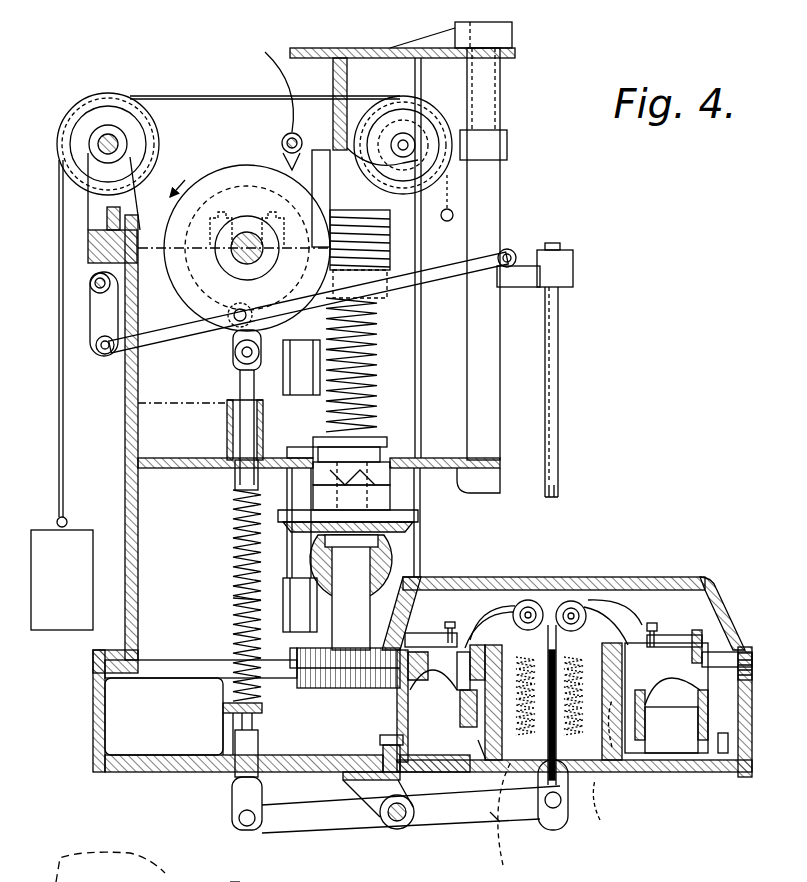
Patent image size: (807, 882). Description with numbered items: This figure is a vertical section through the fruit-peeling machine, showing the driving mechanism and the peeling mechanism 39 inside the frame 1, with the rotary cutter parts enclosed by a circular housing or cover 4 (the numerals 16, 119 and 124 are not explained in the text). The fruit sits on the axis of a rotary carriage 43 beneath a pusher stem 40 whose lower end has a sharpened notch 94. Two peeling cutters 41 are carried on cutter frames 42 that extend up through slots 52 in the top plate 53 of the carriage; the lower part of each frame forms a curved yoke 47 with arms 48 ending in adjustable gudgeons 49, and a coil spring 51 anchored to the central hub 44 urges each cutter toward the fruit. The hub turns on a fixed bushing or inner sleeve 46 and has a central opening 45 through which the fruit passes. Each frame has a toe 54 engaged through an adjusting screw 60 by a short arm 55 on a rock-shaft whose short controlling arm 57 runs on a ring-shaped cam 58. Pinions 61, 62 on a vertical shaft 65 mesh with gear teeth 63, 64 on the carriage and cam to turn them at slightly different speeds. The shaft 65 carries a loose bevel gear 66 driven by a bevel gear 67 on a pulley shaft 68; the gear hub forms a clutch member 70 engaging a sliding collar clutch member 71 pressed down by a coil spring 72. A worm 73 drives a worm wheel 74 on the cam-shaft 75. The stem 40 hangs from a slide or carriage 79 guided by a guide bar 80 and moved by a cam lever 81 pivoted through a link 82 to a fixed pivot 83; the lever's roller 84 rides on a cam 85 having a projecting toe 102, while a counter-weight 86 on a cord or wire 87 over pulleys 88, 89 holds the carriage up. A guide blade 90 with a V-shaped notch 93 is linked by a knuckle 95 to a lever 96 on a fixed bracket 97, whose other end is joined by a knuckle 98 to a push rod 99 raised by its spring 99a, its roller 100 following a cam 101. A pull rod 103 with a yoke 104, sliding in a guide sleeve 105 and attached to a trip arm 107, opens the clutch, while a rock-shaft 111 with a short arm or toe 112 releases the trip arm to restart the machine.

The frame 1 is at (127, 393).
The circular housing or cover 4 is at (682, 577).
The housing cover 16 is at (470, 590).
The peeling mechanism 39 is at (614, 611).
The pusher stem 40 is at (555, 377).
The peeling cutter 41 is at (528, 598).
The cutter frame 42 is at (486, 622).
The rotary carriage 43 is at (668, 702).
The central hub 44 is at (630, 745).
The central opening 45 is at (483, 742).
The fixed bushing or inner sleeve 46 is at (612, 747).
The curved yoke 47 is at (462, 722).
The arms or prongs 48 is at (600, 820).
The adjustable gudgeons 49 is at (540, 838).
The coil spring 51 is at (550, 689).
The slot 52 is at (425, 690).
The top plate 53 is at (705, 632).
The toe 54 is at (452, 668).
The short arm 55 is at (440, 638).
The short controlling arm 57 is at (418, 632).
The ring-shaped cam 58 is at (752, 660).
The adjusting screw 60 is at (455, 624).
The pinion 61 is at (305, 690).
The pinion 62 is at (297, 658).
The gear teeth 63 is at (740, 692).
The gear teeth 64 is at (752, 673).
The vertical shaft 65 is at (345, 610).
The bevel gear 66 is at (412, 533).
The bevel gear 67 is at (392, 552).
The pulley shaft 68 is at (338, 558).
The clutch member 70 is at (315, 498).
The clutch member 71 is at (390, 452).
The coil spring 72 is at (377, 375).
The worm 73 is at (358, 217).
The worm wheel 74 is at (193, 235).
The cam-shaft 75 is at (247, 240).
The slide or carriage 79 is at (478, 215).
The guide bar 80 is at (490, 330).
The cam lever 81 is at (424, 284).
The link 82 is at (90, 307).
The fixed pivot 83 is at (90, 282).
The roller 84 is at (226, 340).
The cam 85 is at (190, 340).
The counter-weight 86 is at (44, 620).
The cord or wire 87 is at (234, 95).
The pulley 88 is at (163, 125).
The pulley 89 is at (437, 104).
The guide blade 90 is at (515, 835).
The V-shaped notch 93 is at (556, 630).
The notch 94 is at (560, 480).
The knuckle 95 is at (556, 788).
The lever 96 is at (493, 818).
The fixed bracket 97 is at (380, 812).
The knuckle 98 is at (233, 790).
The push rod 99 is at (240, 558).
The spring 99a is at (238, 598).
The roller 100 is at (232, 370).
The cam 101 is at (170, 262).
The projecting toe 102 is at (240, 388).
The pull rod 103 is at (300, 432).
The yoke 104 is at (332, 447).
The guide sleeve 105 is at (302, 370).
The trip arm 107 is at (313, 180).
The rock-shaft 111 is at (266, 81).
The short arm or toe 112 is at (285, 138).
The casing 119 is at (165, 872).
The casing part 124 is at (238, 875).